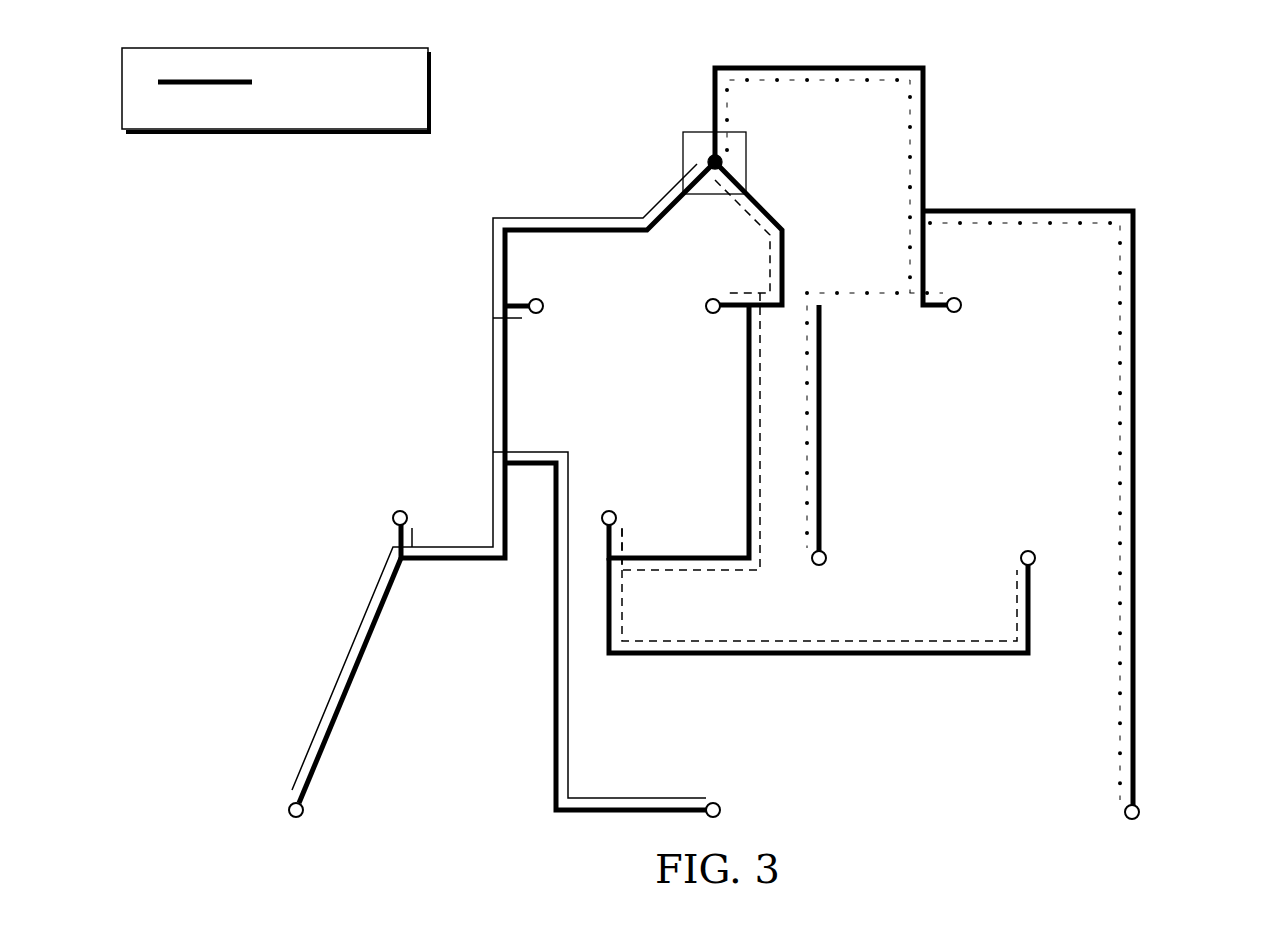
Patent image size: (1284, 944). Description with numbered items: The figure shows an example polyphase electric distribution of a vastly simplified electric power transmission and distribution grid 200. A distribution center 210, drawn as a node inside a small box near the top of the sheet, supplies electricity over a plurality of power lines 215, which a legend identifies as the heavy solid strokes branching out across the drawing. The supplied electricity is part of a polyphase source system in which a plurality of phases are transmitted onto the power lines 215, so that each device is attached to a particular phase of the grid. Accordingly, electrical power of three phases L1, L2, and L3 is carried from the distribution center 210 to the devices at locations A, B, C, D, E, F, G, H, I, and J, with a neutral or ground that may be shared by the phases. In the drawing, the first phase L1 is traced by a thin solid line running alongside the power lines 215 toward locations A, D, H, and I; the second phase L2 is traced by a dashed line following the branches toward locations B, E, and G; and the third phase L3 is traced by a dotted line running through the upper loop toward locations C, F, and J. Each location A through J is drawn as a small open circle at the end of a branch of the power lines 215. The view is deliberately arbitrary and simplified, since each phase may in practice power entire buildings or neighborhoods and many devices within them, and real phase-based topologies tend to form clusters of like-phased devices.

The electric power transmission and distribution grid 200 is at (1203, 107).
The distribution center 210 is at (688, 130).
The power lines 215 is at (275, 90).
The first phase L1 is at (617, 216).
The second phase L2 is at (753, 215).
The third phase L3 is at (867, 80).
The location A is at (551, 319).
The location B is at (701, 288).
The location C is at (966, 287).
The location D is at (383, 515).
The location E is at (622, 503).
The location F is at (804, 538).
The location G is at (1040, 538).
The location H is at (280, 791).
The location I is at (722, 792).
The location J is at (1142, 793).